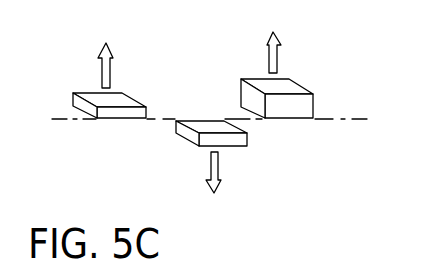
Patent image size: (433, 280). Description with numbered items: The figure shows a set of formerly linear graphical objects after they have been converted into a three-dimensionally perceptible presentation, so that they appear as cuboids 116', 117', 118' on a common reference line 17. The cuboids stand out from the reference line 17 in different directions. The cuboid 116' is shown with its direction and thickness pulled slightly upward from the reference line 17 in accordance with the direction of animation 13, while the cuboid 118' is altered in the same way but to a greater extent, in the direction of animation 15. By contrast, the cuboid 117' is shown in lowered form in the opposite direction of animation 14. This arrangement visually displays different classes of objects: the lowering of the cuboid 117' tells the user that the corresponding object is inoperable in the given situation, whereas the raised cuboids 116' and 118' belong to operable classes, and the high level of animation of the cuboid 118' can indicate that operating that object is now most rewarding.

The direction of animation 13 is at (108, 68).
The opposite direction of animation 14 is at (212, 168).
The direction of animation 15 is at (274, 55).
The reference line 17 is at (343, 119).
The cuboid 116' is at (104, 149).
The cuboid 117' is at (234, 163).
The cuboid 118' is at (309, 142).